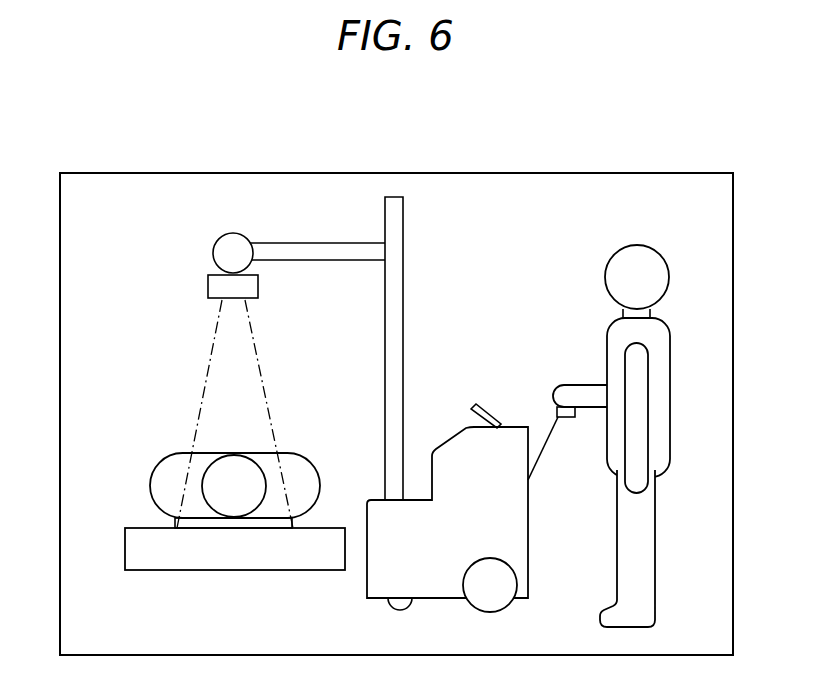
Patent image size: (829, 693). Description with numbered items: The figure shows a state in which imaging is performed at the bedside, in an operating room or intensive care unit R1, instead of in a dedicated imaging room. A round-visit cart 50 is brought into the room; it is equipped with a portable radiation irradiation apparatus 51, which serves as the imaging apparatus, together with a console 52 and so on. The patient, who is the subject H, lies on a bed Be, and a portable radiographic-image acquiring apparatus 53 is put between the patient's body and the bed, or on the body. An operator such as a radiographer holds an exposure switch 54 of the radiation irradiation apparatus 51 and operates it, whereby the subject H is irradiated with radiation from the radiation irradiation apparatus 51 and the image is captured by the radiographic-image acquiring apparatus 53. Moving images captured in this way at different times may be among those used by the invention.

The intensive care unit R1 is at (655, 172).
The portable radiation irradiation apparatus 51 is at (237, 245).
The console 52 is at (485, 410).
The portable radiographic-image acquiring apparatus 53 is at (213, 523).
The exposure switch 54 is at (572, 423).
The round-visit cart 50 is at (530, 542).
The subject H is at (172, 457).
The bed Be is at (150, 562).